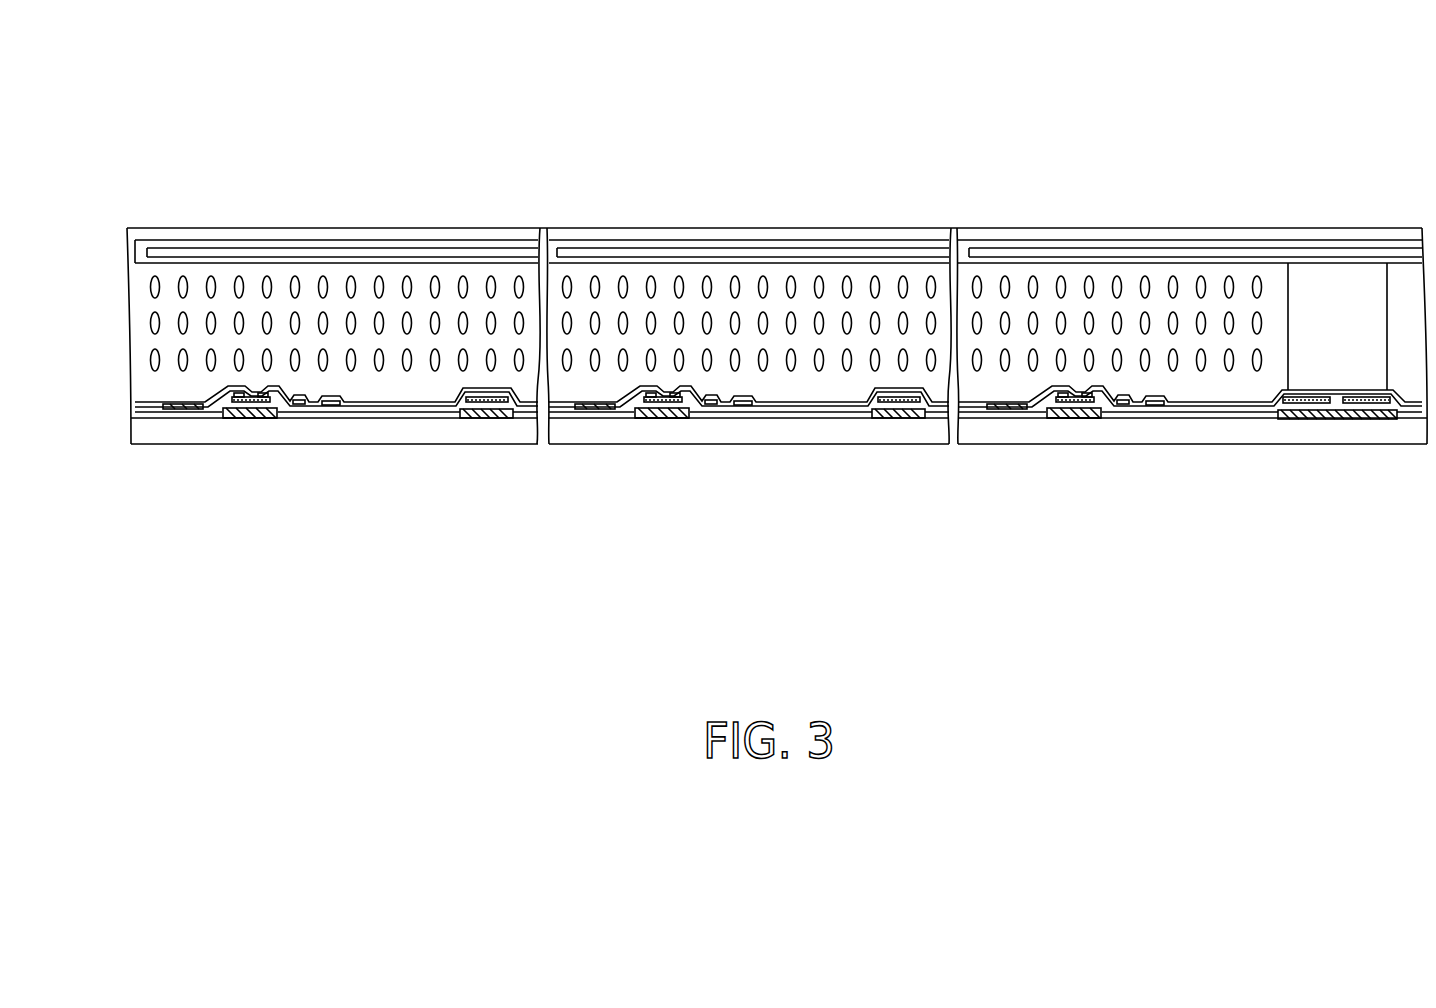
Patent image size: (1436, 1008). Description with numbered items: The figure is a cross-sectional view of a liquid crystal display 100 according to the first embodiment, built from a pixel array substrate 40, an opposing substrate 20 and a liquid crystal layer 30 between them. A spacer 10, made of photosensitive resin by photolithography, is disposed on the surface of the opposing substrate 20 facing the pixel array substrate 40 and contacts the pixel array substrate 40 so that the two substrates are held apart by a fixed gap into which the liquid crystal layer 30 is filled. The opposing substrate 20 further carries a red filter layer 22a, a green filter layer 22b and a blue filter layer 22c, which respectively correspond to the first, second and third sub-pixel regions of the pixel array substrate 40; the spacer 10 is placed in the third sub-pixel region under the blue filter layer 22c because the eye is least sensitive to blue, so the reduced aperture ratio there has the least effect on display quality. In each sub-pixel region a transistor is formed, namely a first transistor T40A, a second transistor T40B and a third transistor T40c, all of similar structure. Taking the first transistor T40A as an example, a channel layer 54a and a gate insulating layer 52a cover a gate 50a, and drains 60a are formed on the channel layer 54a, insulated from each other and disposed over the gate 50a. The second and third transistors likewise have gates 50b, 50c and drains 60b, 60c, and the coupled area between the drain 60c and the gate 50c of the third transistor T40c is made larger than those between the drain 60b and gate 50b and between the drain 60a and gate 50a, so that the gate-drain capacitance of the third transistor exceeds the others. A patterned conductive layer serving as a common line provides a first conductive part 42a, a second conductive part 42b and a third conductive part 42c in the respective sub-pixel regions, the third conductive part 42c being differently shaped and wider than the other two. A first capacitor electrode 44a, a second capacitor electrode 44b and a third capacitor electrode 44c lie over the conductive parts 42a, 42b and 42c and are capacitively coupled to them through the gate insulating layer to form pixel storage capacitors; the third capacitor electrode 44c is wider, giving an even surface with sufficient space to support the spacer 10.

The liquid crystal display 100 is at (1402, 75).
The spacer 10 is at (1340, 275).
The opposing substrate 20 is at (135, 231).
The liquid crystal layer 30 is at (197, 282).
The red filter layer 22a is at (338, 250).
The green filter layer 22b is at (750, 250).
The blue filter layer 22c is at (1160, 250).
The pixel array substrate 40 is at (140, 447).
The first conductive part 42a is at (465, 420).
The second conductive part 42b is at (902, 443).
The third conductive part 42c is at (1287, 421).
The first capacitor electrode 44a is at (500, 420).
The second capacitor electrode 44b is at (910, 468).
The third capacitor electrode 44c is at (1381, 421).
The gate 50a is at (228, 413).
The gate 50b is at (632, 446).
The gate 50c is at (1044, 446).
The gate insulating layer 52a is at (204, 413).
The channel layer 54a is at (262, 402).
The drains 60a is at (193, 406).
The drain 60b is at (669, 449).
The drain 60c is at (1077, 449).
The first transistor T40A is at (275, 419).
The second transistor T40B is at (716, 478).
The third transistor T40c is at (1126, 478).